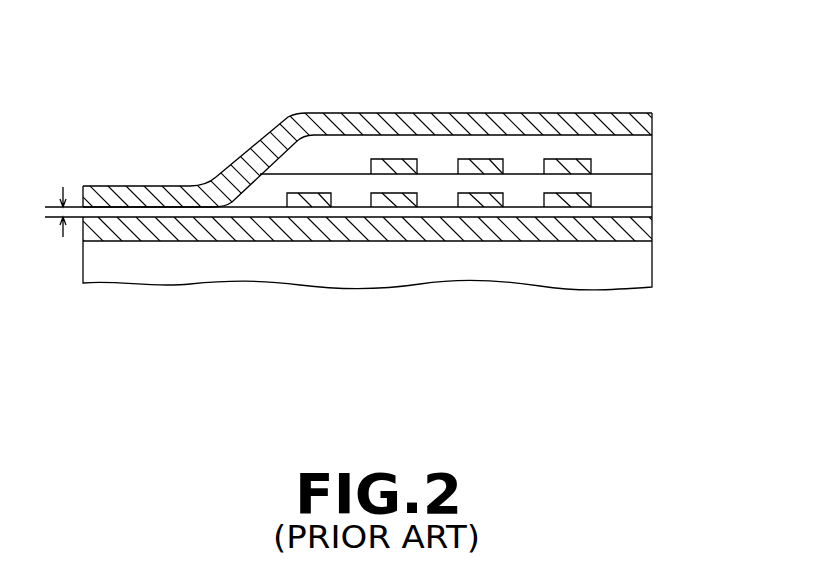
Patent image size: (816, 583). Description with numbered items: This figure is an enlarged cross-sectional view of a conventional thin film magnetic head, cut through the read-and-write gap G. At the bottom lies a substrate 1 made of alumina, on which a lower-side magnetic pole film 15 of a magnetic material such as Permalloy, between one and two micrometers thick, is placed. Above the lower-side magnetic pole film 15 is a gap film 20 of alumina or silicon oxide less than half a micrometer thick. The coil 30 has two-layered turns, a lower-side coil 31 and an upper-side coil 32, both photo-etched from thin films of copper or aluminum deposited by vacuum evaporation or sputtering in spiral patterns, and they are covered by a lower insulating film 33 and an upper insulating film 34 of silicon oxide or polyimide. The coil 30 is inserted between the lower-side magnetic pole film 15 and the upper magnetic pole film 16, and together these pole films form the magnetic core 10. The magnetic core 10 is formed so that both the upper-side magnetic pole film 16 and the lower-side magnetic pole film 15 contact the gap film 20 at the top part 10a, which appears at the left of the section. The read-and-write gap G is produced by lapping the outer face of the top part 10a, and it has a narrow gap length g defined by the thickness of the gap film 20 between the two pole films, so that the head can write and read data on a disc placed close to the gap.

The substrate 1 is at (145, 270).
The magnetic core 10 is at (706, 140).
The top part of the magnetic core 10a is at (123, 186).
The lower-side magnetic pole film 15 is at (650, 228).
The upper-side magnetic pole film 16 is at (643, 127).
The gap film 20 is at (240, 213).
The coil 30 is at (460, 116).
The lower-side coil 31 is at (503, 207).
The upper-side coil 32 is at (552, 160).
The lower insulating film 33 is at (532, 200).
The upper insulating film 34 is at (618, 163).
The read-and-write gap G is at (82, 206).
The gap length g is at (57, 217).